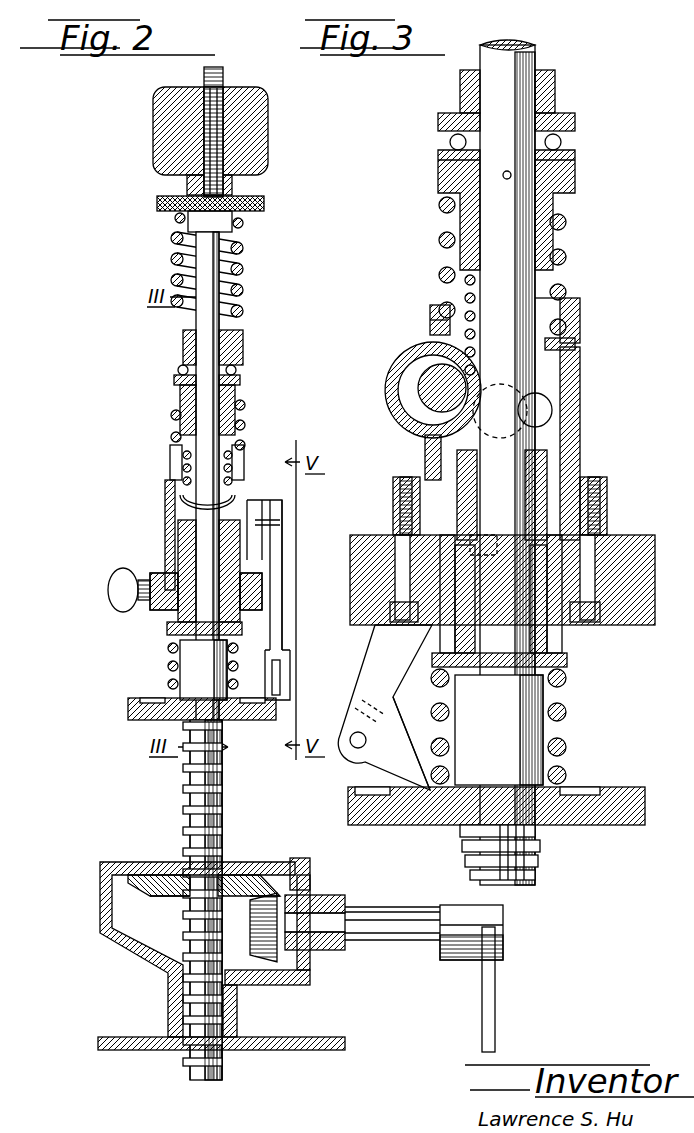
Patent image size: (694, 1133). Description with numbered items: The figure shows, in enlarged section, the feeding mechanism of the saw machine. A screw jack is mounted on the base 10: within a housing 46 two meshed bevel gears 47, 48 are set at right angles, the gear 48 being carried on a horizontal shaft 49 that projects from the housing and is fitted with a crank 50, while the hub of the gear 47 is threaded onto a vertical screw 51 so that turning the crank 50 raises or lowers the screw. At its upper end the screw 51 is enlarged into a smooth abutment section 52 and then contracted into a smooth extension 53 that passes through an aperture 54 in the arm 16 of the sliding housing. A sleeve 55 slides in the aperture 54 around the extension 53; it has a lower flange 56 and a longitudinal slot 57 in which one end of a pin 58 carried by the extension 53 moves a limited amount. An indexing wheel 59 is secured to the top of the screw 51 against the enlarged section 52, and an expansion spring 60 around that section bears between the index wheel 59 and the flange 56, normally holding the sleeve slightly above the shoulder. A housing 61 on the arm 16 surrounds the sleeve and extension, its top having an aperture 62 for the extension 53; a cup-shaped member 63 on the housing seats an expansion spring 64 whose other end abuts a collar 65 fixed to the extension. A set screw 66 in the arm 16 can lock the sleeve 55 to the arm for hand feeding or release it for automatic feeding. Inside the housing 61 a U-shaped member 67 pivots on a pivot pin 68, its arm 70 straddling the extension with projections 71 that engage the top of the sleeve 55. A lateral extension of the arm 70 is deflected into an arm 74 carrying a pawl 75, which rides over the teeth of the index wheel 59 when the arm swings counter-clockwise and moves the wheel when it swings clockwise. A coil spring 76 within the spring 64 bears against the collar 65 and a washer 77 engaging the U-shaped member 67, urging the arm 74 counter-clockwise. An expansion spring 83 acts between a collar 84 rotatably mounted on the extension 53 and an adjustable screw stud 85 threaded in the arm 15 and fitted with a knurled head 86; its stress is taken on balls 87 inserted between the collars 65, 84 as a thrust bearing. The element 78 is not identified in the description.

In FIG. 2, the base 10 is at (297, 1037).
In FIG. 2, the arm 15 is at (260, 128).
In FIG. 2, the arm 16 is at (165, 575).
In FIG. 3, the arm 16 is at (620, 550).
In FIG. 2, the housing 46 is at (118, 945).
In FIG. 2, the bevel gear 47 is at (248, 880).
In FIG. 2, the bevel gear 48 is at (278, 965).
In FIG. 2, the shaft 49 is at (392, 930).
In FIG. 2, the crank 50 is at (482, 998).
In FIG. 2, the screw 51 is at (183, 826).
In FIG. 3, the screw 51 is at (540, 852).
In FIG. 2, the enlarged smooth abutment section 52 is at (178, 660).
In FIG. 3, the enlarged smooth abutment section 52 is at (535, 710).
In FIG. 2, the extension 53 is at (195, 462).
In FIG. 3, the extension 53 is at (488, 328).
In FIG. 2, the aperture 54 is at (180, 560).
In FIG. 3, the aperture 54 is at (555, 625).
In FIG. 2, the sleeve 55 is at (262, 580).
In FIG. 3, the sleeve 55 is at (553, 478).
In FIG. 3, the flange 56 is at (567, 660).
In FIG. 3, the slot 57 is at (466, 592).
In FIG. 3, the pin 58 is at (488, 530).
In FIG. 2, the indexing wheel 59 is at (140, 715).
In FIG. 3, the indexing wheel 59 is at (632, 790).
In FIG. 2, the expansion spring 60 is at (168, 682).
In FIG. 3, the expansion spring 60 is at (567, 742).
In FIG. 2, the housing 61 is at (265, 545).
In FIG. 3, the housing 61 is at (578, 438).
In FIG. 3, the aperture 62 is at (575, 345).
In FIG. 3, the cup-shaped member 63 is at (580, 305).
In FIG. 2, the expansion spring 64 is at (247, 418).
In FIG. 3, the expansion spring 64 is at (568, 272).
In FIG. 2, the collar 65 is at (238, 387).
In FIG. 3, the collar 65 is at (545, 222).
In FIG. 2, the set screw 66 is at (110, 585).
In FIG. 3, the U-shaped member 67 is at (420, 392).
In FIG. 3, the pivot pin 68 is at (430, 380).
In FIG. 3, the arm 70 is at (545, 408).
In FIG. 3, the projections 71 is at (440, 440).
In FIG. 2, the arm 74 is at (282, 557).
In FIG. 3, the arm 74 is at (378, 655).
In FIG. 2, the pawl 75 is at (290, 696).
In FIG. 2, the coil spring 76 is at (233, 451).
In FIG. 3, the coil spring 76 is at (462, 282).
In FIG. 3, the washer 77 is at (548, 395).
In FIG. 3, the lever arm 78 is at (395, 752).
In FIG. 2, the expansion spring 83 is at (243, 265).
In FIG. 2, the collar 84 is at (244, 350).
In FIG. 3, the collar 84 is at (548, 108).
In FIG. 2, the adjustable screw stud 85 is at (222, 160).
In FIG. 2, the knurled head portion 86 is at (266, 202).
In FIG. 2, the balls 87 is at (178, 371).
In FIG. 3, the balls 87 is at (562, 142).